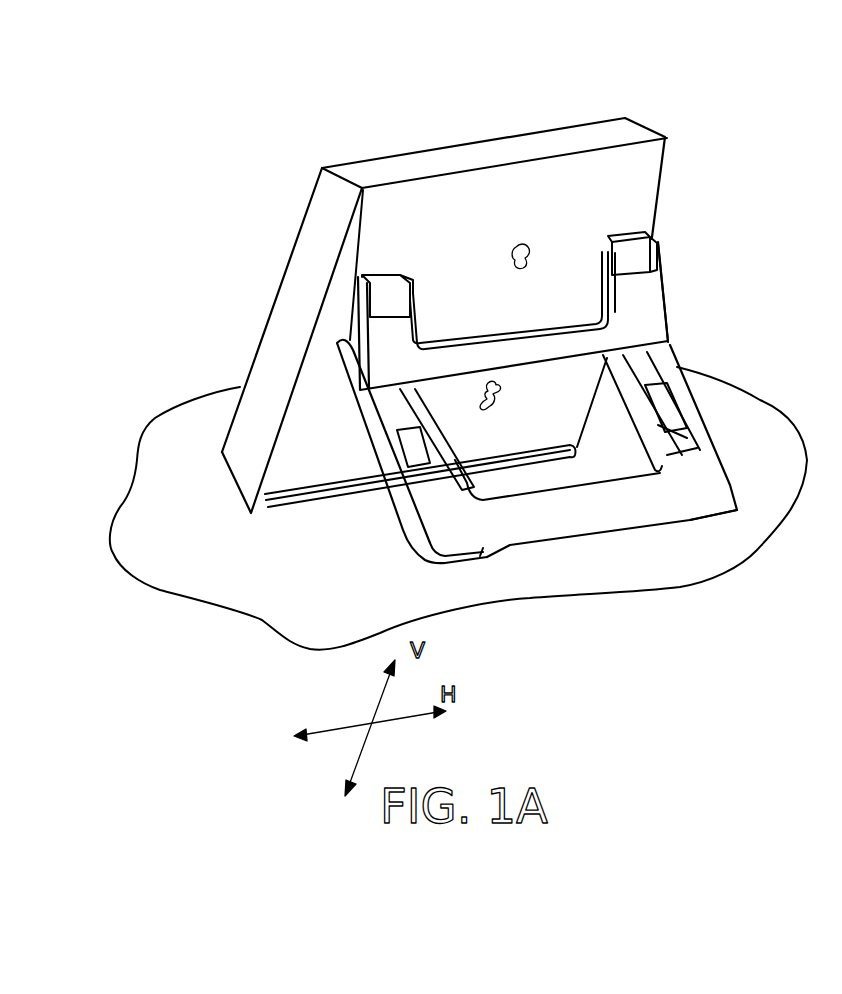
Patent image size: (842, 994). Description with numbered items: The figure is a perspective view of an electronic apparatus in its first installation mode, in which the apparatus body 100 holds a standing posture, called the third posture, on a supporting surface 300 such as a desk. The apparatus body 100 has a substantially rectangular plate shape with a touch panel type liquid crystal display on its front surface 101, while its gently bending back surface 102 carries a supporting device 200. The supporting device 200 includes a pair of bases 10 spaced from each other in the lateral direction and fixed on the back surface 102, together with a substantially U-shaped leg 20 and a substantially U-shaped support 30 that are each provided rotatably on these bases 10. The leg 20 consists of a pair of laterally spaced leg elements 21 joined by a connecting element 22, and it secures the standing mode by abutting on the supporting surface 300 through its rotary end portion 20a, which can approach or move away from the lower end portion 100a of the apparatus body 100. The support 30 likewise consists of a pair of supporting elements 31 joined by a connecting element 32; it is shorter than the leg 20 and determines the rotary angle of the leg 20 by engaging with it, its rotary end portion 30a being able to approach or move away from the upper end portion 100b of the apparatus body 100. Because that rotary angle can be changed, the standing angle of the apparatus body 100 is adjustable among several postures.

The apparatus body 100 is at (448, 275).
The base 10 is at (448, 315).
The front surface 101 is at (283, 278).
The back surface 102 is at (565, 197).
The lower end portion 100a is at (245, 462).
The upper end portion 100b is at (330, 198).
The supporting device 200 is at (490, 355).
The support 30 is at (472, 241).
The rotary end portion 30a is at (670, 333).
The supporting element 31 is at (388, 345).
The connecting element 32 is at (547, 348).
The leg 20 is at (526, 479).
The rotary end portion 20a is at (427, 552).
The leg element 21 is at (403, 487).
The connecting element 22 is at (603, 513).
The supporting surface 300 is at (256, 578).